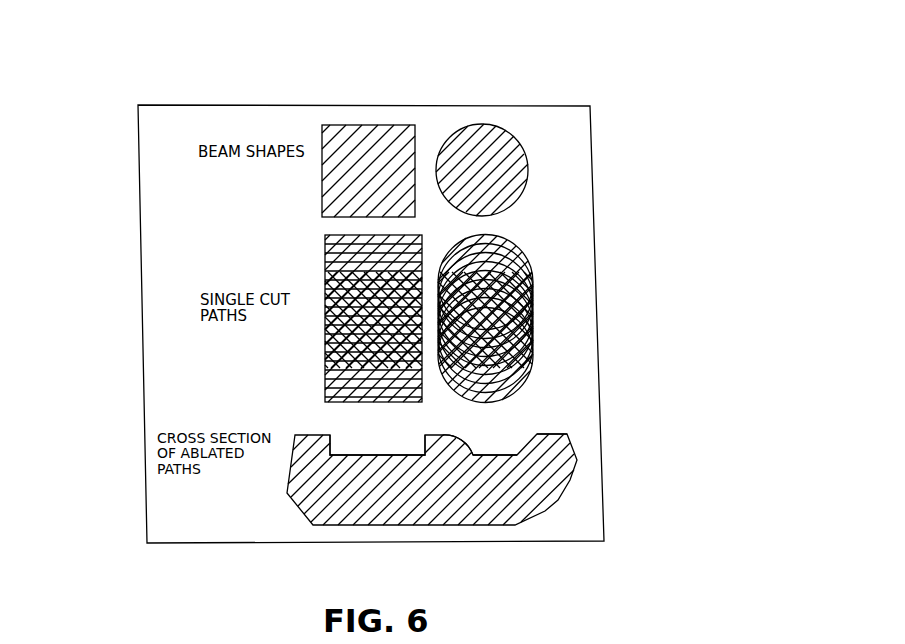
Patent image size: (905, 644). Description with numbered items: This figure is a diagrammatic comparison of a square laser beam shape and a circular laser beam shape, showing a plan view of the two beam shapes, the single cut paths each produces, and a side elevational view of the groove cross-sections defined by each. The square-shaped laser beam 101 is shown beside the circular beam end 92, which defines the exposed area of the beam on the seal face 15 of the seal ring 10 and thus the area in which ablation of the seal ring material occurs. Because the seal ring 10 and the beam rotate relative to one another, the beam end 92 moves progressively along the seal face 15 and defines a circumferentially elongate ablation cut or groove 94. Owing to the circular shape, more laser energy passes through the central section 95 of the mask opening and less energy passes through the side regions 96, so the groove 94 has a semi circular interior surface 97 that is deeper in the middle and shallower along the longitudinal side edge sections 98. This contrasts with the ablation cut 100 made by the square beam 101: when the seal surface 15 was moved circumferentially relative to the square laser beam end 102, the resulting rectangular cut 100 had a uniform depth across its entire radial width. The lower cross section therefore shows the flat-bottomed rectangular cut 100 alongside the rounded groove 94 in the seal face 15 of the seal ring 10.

The seal ring 10 is at (563, 463).
The seal face 15 is at (552, 431).
The beam end 92 is at (530, 177).
The ablation cut or groove 94 is at (487, 455).
The central section 95 is at (477, 112).
The side regions 96 is at (438, 117).
The semi circular interior surface 97 is at (427, 420).
The longitudinal side edge sections 98 is at (427, 420).
The ablation cut 100 is at (360, 501).
The laser beam having a square shape 101 is at (349, 128).
The laser beam end 102 is at (226, 122).